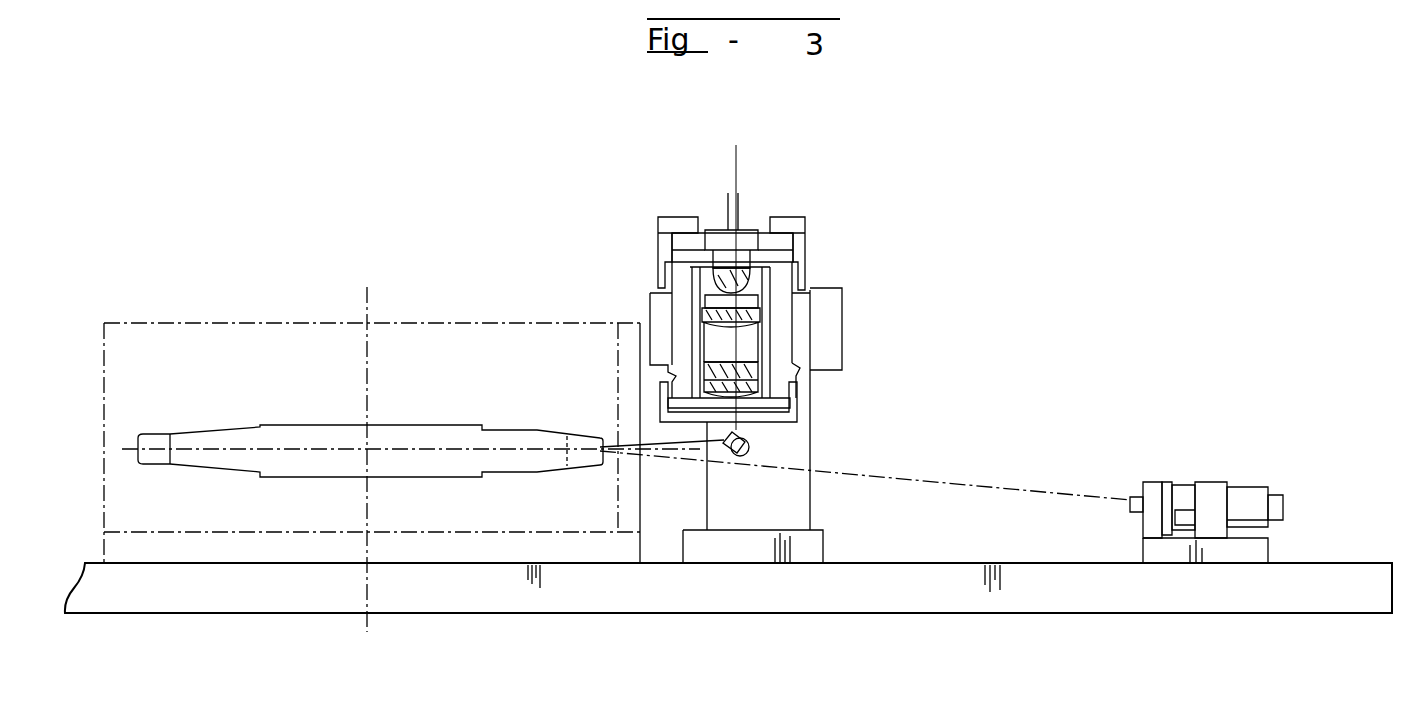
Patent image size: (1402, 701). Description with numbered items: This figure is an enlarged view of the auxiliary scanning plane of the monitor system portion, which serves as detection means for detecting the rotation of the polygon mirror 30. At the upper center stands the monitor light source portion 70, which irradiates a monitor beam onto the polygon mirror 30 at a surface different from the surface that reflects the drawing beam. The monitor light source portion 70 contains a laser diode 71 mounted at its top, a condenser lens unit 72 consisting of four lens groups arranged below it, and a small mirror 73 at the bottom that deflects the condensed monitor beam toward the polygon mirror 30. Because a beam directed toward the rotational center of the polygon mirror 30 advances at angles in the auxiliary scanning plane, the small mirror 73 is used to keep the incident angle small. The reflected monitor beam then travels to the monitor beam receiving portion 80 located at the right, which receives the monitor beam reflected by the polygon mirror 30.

The polygon mirror 30 is at (447, 430).
The monitor light source portion 70 is at (817, 257).
The laser diode 71 is at (752, 222).
The condenser lens unit 72 is at (777, 322).
The small mirror 73 is at (747, 452).
The monitor beam receiving portion 80 is at (1186, 464).